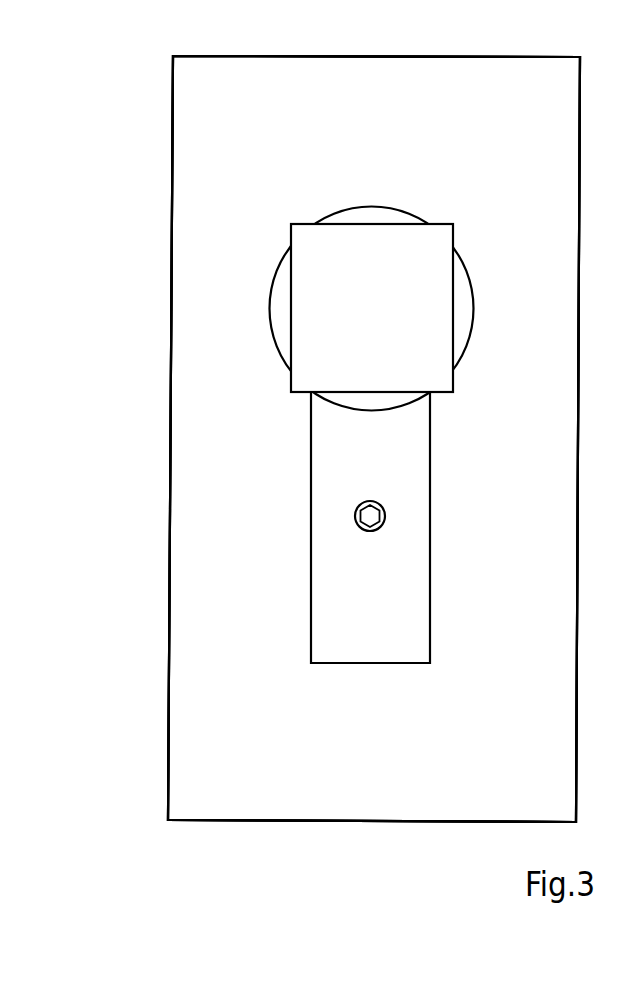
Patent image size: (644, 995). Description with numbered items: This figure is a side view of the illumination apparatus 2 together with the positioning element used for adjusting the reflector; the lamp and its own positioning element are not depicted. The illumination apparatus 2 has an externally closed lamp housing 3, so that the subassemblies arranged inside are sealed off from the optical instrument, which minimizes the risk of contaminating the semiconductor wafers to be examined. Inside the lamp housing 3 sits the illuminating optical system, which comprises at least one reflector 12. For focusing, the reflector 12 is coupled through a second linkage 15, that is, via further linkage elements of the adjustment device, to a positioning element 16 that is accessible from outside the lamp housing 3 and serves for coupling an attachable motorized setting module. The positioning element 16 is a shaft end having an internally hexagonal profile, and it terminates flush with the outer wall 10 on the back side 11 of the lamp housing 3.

The illumination apparatus 2 is at (225, 316).
The lamp housing 3 is at (170, 407).
The outer wall 10 is at (168, 743).
The back side 11 is at (205, 673).
The reflector 12 is at (465, 325).
The second linkage 15 is at (418, 451).
The positioning element 16 is at (380, 522).